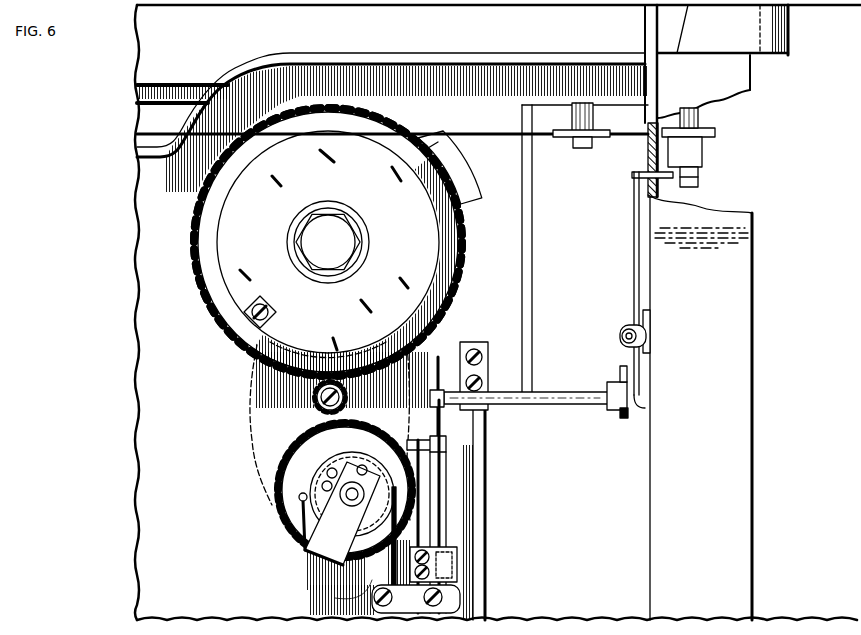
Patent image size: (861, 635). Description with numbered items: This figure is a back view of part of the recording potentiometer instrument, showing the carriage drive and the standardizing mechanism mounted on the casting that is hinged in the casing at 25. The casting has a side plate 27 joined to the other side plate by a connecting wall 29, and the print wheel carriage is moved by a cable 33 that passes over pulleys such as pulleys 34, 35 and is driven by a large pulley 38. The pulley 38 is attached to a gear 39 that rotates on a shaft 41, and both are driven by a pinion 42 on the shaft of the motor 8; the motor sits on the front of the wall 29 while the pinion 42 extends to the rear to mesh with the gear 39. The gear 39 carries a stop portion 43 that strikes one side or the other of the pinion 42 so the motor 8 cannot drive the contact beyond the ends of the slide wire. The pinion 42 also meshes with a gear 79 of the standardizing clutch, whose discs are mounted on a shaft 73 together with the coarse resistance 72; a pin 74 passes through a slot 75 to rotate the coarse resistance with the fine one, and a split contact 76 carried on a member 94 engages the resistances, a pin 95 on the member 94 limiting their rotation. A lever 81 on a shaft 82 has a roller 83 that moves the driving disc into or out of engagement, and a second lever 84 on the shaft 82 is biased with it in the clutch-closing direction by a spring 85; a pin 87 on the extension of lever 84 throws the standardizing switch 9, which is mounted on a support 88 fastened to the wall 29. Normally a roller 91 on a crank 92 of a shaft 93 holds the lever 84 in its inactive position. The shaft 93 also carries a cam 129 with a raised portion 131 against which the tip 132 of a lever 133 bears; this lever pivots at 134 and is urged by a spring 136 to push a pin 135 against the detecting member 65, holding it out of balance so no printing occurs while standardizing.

The connecting wall 29 is at (150, 50).
The hinge 25 is at (778, 45).
The cable 33 is at (500, 133).
The stop portion 43 is at (462, 165).
The shaft 41 is at (345, 228).
The gear 39 is at (196, 245).
The large pulley 38 is at (240, 285).
The pulley 35 is at (575, 143).
The side plate 27 is at (650, 148).
The pin 135 is at (640, 171).
The pulley 34 is at (712, 128).
The detecting member 65 is at (700, 176).
The lever 133 is at (636, 250).
The spring 136 is at (644, 318).
The pivot 134 is at (633, 330).
The tip of lever 132 is at (636, 388).
The shaft 93 is at (585, 393).
The raised portion 131 is at (640, 413).
The cam 129 is at (620, 418).
The roller 91 is at (440, 392).
The crank 92 is at (463, 410).
The pin 87 is at (412, 440).
The pinion 42 is at (318, 399).
The motor 8 is at (256, 434).
The coarse resistance 72 is at (343, 457).
The pin 95 is at (362, 465).
The roller 83 is at (410, 453).
The pin 74 is at (327, 473).
The slot 75 is at (322, 486).
The second lever 84 is at (440, 471).
The gear 79 is at (276, 517).
The split contact 76 is at (301, 536).
The shaft 73 is at (356, 543).
The lever 81 is at (397, 520).
The support 88 is at (447, 548).
The standardizing switch 9 is at (450, 501).
The member 94 is at (322, 549).
The shaft 82 is at (390, 578).
The spring 85 is at (416, 599).